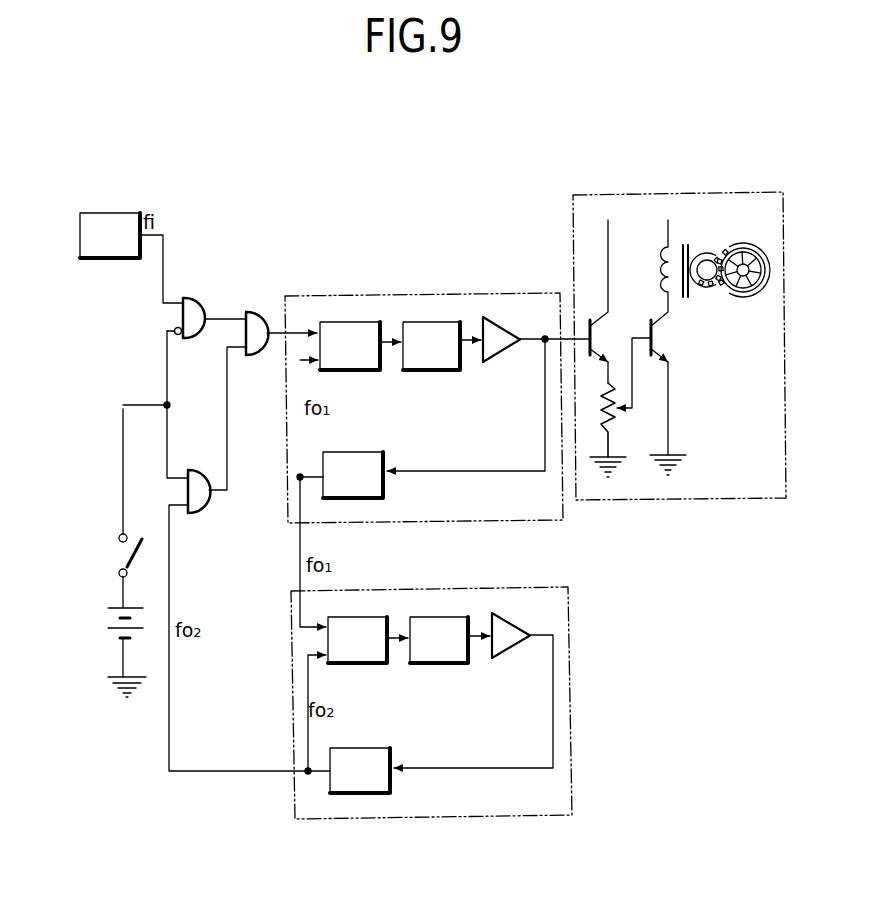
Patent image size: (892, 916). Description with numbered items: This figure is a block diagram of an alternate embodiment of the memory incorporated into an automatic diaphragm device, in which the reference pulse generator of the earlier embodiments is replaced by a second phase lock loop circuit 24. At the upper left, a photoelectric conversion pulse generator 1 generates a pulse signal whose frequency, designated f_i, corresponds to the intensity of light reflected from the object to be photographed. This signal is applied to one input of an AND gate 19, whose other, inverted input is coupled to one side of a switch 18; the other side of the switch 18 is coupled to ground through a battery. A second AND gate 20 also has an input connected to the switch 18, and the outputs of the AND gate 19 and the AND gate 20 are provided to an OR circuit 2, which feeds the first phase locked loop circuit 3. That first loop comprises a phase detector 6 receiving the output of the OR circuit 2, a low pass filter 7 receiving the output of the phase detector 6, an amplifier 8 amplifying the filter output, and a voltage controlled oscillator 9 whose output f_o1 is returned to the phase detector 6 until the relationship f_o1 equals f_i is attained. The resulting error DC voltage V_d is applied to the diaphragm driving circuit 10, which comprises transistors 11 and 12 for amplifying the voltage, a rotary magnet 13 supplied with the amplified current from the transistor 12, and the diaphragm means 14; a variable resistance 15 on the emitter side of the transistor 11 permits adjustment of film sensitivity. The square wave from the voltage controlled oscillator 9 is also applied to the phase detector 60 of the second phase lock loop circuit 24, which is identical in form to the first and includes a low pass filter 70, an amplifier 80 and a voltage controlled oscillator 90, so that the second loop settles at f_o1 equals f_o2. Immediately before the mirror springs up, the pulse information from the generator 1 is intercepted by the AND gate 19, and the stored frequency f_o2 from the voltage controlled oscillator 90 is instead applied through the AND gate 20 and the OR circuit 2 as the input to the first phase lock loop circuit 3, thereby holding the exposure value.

The photoelectric conversion pulse generator 1 is at (117, 220).
The OR circuit 2 is at (250, 312).
The phase locked loop circuit 3 is at (412, 296).
The phase detector 6 is at (360, 360).
The low pass filter 7 is at (427, 358).
The amplifier 8 is at (500, 345).
The voltage controlled oscillator 9 is at (380, 487).
The diaphragm driving circuit 10 is at (638, 194).
The transistor 11 is at (602, 340).
The transistor 12 is at (660, 340).
The rotary magnet 13 is at (690, 247).
The diaphragm means 14 is at (749, 298).
The variable resistance 15 is at (613, 418).
The switch 18 is at (127, 558).
The AND gate 19 is at (198, 297).
The AND gate 20 is at (208, 512).
The second phase lock loop circuit 24 is at (495, 817).
The phase detector 60 is at (365, 655).
The low pass filter 70 is at (440, 655).
The amplifier 80 is at (508, 640).
The voltage controlled oscillator 90 is at (385, 778).